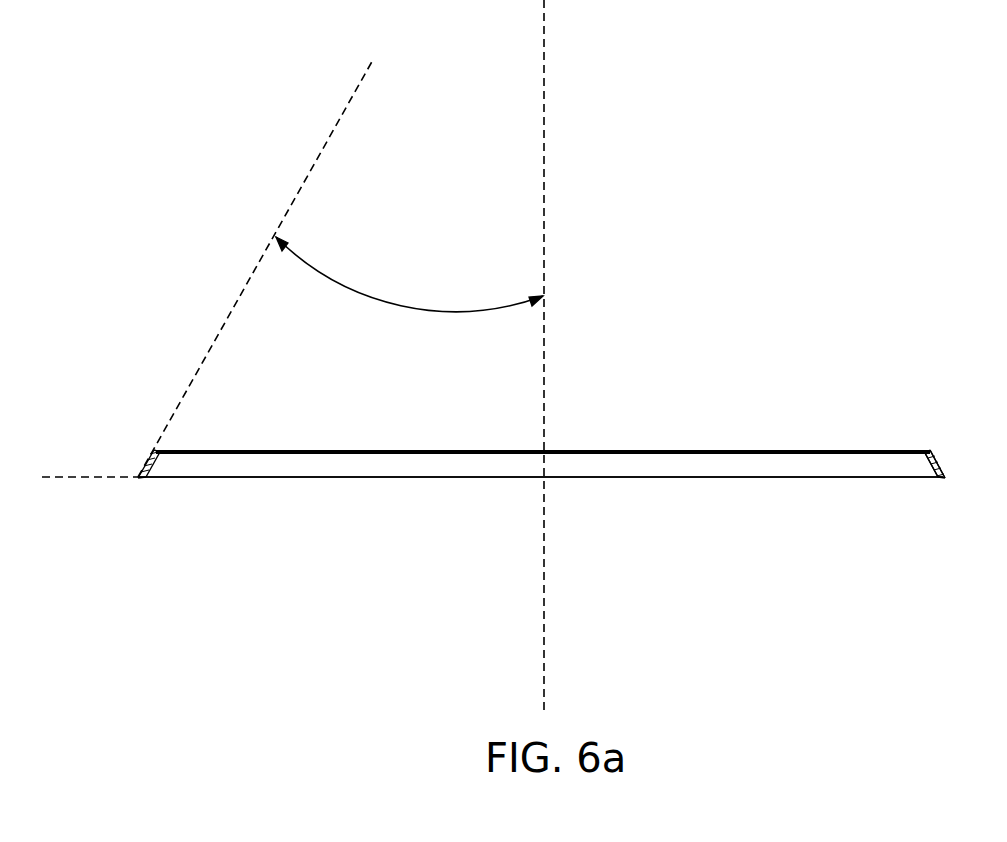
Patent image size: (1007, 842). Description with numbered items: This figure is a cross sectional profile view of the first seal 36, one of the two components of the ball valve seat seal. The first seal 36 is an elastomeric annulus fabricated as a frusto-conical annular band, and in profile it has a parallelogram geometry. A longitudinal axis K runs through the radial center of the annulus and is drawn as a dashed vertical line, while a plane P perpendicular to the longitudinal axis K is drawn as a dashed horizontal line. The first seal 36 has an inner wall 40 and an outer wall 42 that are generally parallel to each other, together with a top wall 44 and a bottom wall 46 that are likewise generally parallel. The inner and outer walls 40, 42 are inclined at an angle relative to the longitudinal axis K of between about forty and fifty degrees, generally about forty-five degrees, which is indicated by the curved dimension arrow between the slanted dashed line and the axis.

The first seal 36 is at (816, 467).
The inner wall 40 is at (924, 470).
The outer wall 42 is at (938, 463).
The top wall 44 is at (757, 452).
The bottom wall 46 is at (749, 478).
The longitudinal axis K is at (544, 243).
The plane P is at (65, 479).